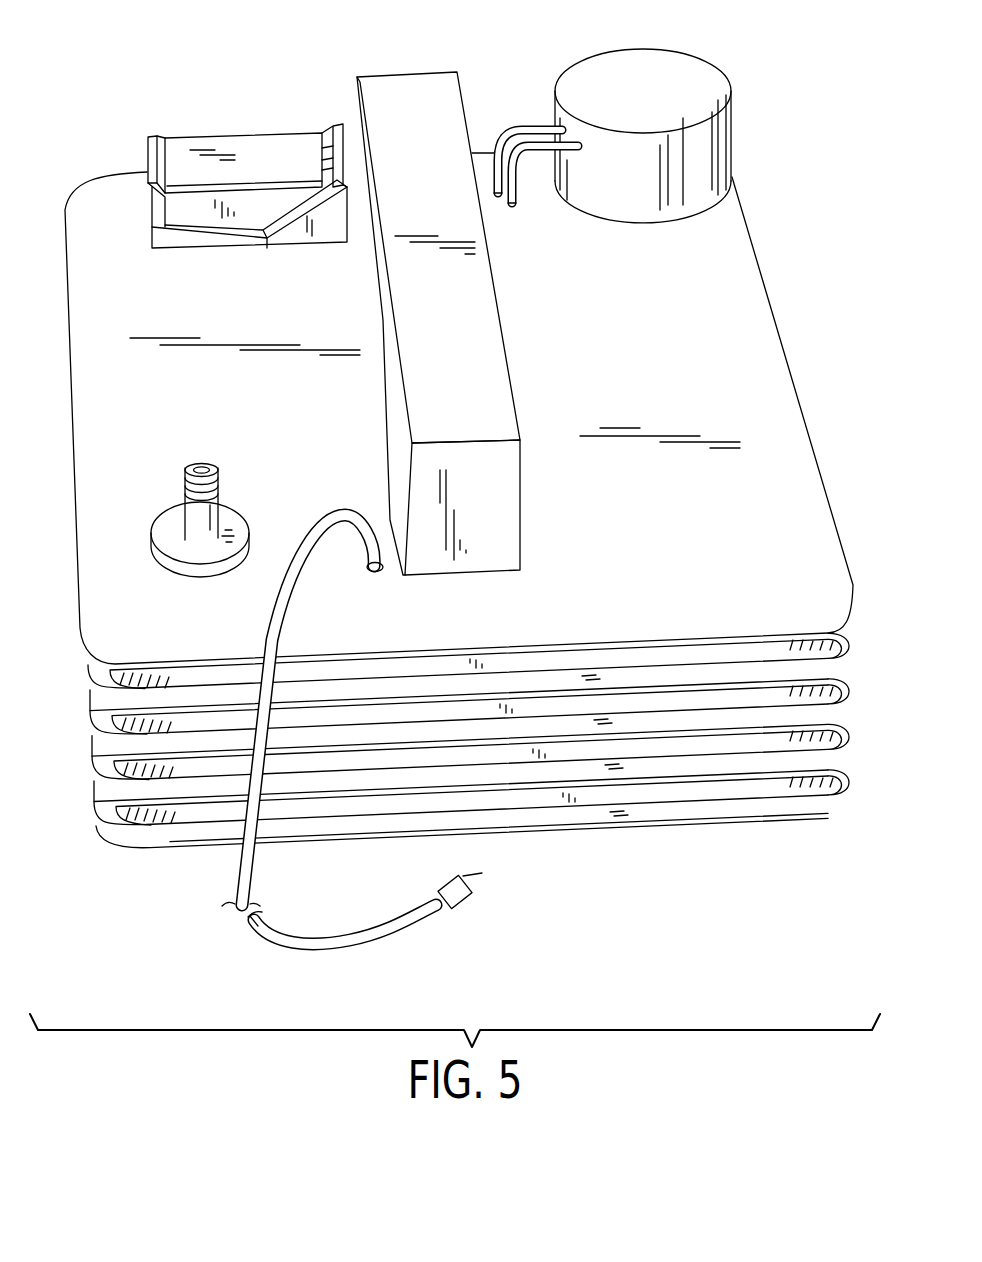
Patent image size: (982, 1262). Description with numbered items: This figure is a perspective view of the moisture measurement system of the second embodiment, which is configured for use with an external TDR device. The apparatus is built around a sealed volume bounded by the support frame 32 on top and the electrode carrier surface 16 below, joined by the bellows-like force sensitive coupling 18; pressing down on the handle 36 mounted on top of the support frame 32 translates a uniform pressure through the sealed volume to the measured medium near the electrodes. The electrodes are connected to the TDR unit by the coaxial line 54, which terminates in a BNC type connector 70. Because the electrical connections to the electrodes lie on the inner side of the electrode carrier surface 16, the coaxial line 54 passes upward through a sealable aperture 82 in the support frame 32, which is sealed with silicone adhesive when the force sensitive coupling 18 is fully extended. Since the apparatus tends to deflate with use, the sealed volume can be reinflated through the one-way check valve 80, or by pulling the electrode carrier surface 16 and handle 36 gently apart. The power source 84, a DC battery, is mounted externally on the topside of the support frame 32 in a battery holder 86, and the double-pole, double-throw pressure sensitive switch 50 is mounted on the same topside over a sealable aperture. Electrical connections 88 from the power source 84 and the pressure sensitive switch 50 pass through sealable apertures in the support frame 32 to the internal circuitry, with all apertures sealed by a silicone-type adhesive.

The electrode carrier surface 16 is at (683, 823).
The force sensitive coupling 18 is at (830, 750).
The support frame 32 is at (762, 425).
The handle 36 is at (411, 112).
The pressure sensitive switch 50 is at (708, 145).
The coaxial line 54 is at (243, 868).
The BNC type connector 70 is at (460, 900).
The one-way check valve 80 is at (178, 540).
The sealable aperture 82 is at (377, 572).
The power source 84 is at (256, 160).
The battery holder 86 is at (155, 233).
The electrical connections 88 is at (553, 135).